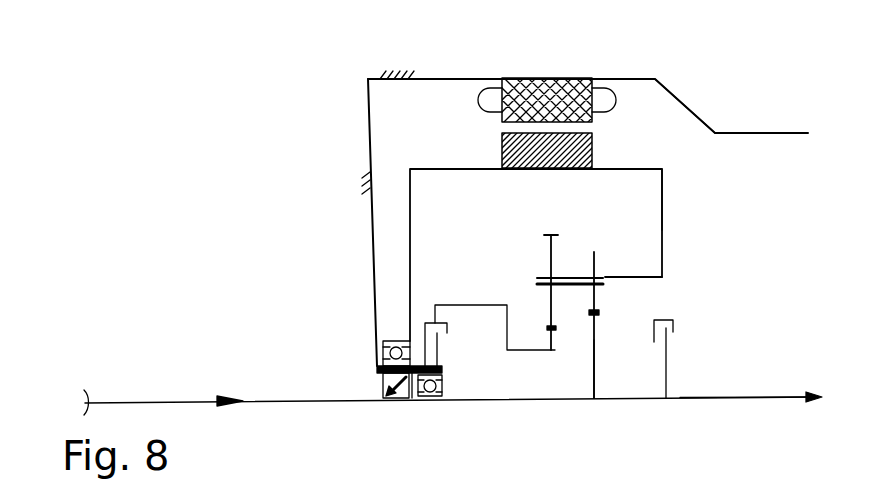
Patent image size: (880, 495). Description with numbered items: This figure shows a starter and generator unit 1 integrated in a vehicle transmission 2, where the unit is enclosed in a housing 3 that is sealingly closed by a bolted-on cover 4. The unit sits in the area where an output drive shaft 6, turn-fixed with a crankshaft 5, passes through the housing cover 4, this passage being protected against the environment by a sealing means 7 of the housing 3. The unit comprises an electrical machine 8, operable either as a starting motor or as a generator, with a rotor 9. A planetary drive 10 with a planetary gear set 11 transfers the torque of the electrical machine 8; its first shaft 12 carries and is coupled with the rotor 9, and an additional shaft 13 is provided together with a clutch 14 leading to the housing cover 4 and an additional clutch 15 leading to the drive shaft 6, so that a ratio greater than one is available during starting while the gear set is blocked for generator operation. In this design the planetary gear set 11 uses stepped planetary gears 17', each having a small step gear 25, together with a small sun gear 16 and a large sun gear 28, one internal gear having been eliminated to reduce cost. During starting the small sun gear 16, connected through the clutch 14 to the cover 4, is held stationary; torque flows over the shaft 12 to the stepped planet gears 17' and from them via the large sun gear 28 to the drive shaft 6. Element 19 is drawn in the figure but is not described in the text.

The starter and generator unit 1 is at (605, 168).
The vehicle transmission 2 is at (771, 366).
The housing 3 is at (428, 78).
The housing cover 4 is at (370, 130).
The crankshaft 5 is at (132, 403).
The drive shaft 6 is at (508, 398).
The sealing means 7 is at (404, 400).
The electrical machine 8 is at (545, 104).
The rotor 9 is at (500, 142).
The planetary drive 10 is at (663, 205).
The planetary gear set 11 is at (597, 328).
The first shaft 12 is at (663, 178).
The additional shaft 13 is at (460, 305).
The clutch 14 is at (447, 333).
The additional clutch 15 is at (673, 332).
The small sun gear 16 is at (553, 341).
The stepped planetary gears 17' is at (522, 272).
The disc arm 19 is at (612, 277).
The small step gear 25 is at (594, 253).
The large sun gear 28 is at (596, 357).